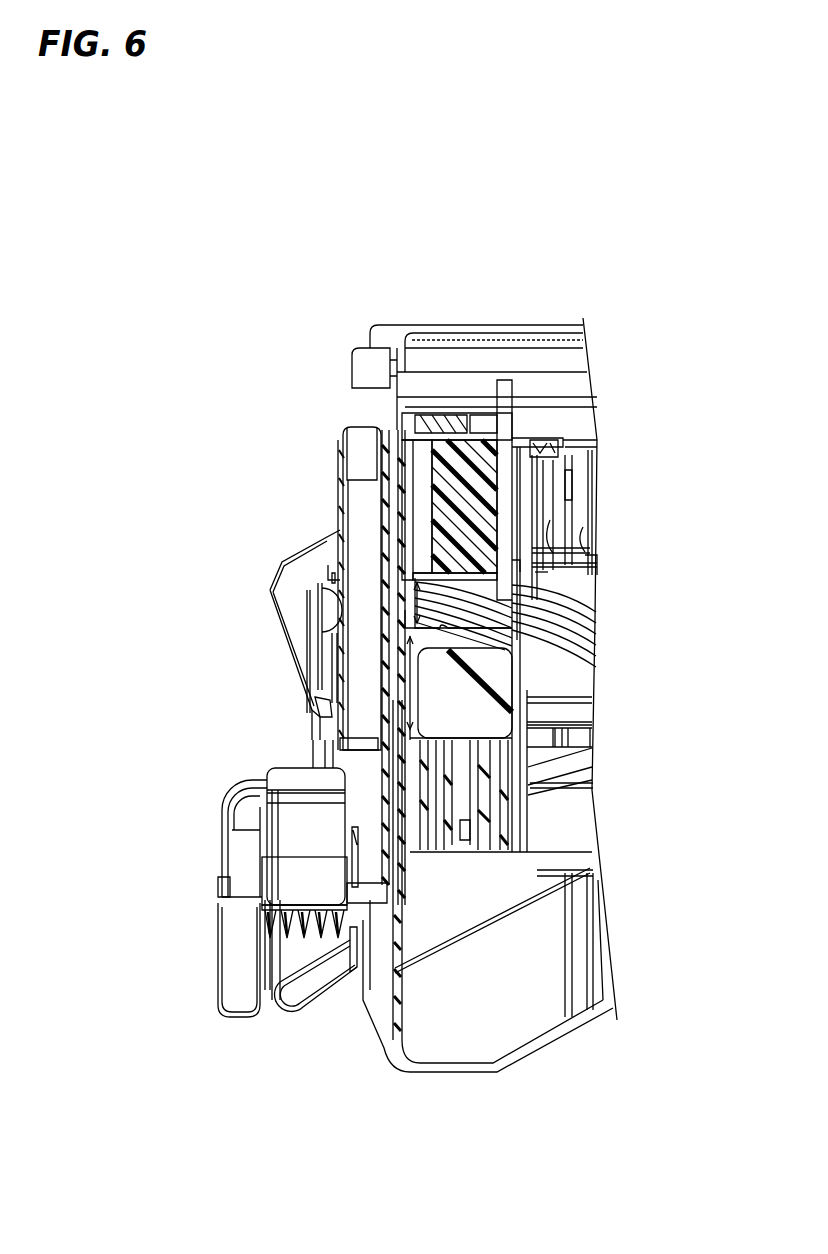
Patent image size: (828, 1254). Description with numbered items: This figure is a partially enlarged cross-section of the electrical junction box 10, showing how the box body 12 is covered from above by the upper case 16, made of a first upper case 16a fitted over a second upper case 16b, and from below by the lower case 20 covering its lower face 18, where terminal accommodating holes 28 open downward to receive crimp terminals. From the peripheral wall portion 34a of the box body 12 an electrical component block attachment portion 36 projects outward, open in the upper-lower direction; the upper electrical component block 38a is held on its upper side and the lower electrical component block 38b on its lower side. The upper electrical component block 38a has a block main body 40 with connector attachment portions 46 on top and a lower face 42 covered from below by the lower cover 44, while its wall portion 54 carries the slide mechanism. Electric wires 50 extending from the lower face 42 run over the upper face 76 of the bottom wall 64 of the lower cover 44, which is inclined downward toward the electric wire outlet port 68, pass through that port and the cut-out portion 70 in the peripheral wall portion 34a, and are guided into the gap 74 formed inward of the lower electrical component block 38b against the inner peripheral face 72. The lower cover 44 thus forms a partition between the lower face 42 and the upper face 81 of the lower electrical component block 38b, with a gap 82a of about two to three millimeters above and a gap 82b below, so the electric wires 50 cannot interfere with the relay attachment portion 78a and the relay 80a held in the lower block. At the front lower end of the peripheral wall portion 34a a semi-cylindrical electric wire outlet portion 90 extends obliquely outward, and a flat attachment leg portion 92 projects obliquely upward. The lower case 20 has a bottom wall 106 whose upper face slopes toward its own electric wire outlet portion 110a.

The electrical junction box 10 is at (489, 239).
The box body 12 is at (614, 520).
The upper case 16 is at (507, 290).
The first upper case 16a is at (535, 330).
The second upper case 16b is at (392, 405).
The lower face 18 is at (592, 563).
The lower case 20 is at (553, 1052).
The terminal accommodating holes 28 is at (550, 525).
The peripheral wall portion 34a is at (528, 793).
The electrical component block attachment portion 36 is at (535, 407).
The upper electrical component block 38a is at (521, 428).
The lower electrical component block 38b is at (523, 713).
The block main body 40 is at (530, 500).
The lower face 42 is at (520, 578).
The lower cover 44 is at (528, 697).
The connector attachment portions 46 is at (514, 482).
The electric wires 50 is at (583, 632).
The wall portion 54 is at (383, 568).
The bottom wall 64 is at (470, 632).
The electric wire outlet port 68 is at (520, 548).
The cut-out portion 70 is at (545, 573).
The inner peripheral face 72 is at (590, 594).
The gap 74 is at (582, 684).
The upper face 76 is at (426, 661).
The relay attachment portion 78a is at (420, 835).
The relay 80a is at (412, 689).
The upper face 81 is at (528, 737).
The gap 82a is at (410, 600).
The gap 82b is at (410, 677).
The electric wire outlet portion 90 is at (245, 852).
The attachment leg portion 92 is at (290, 613).
The bottom wall 106 is at (530, 960).
The electric wire outlet portion 110a is at (245, 957).